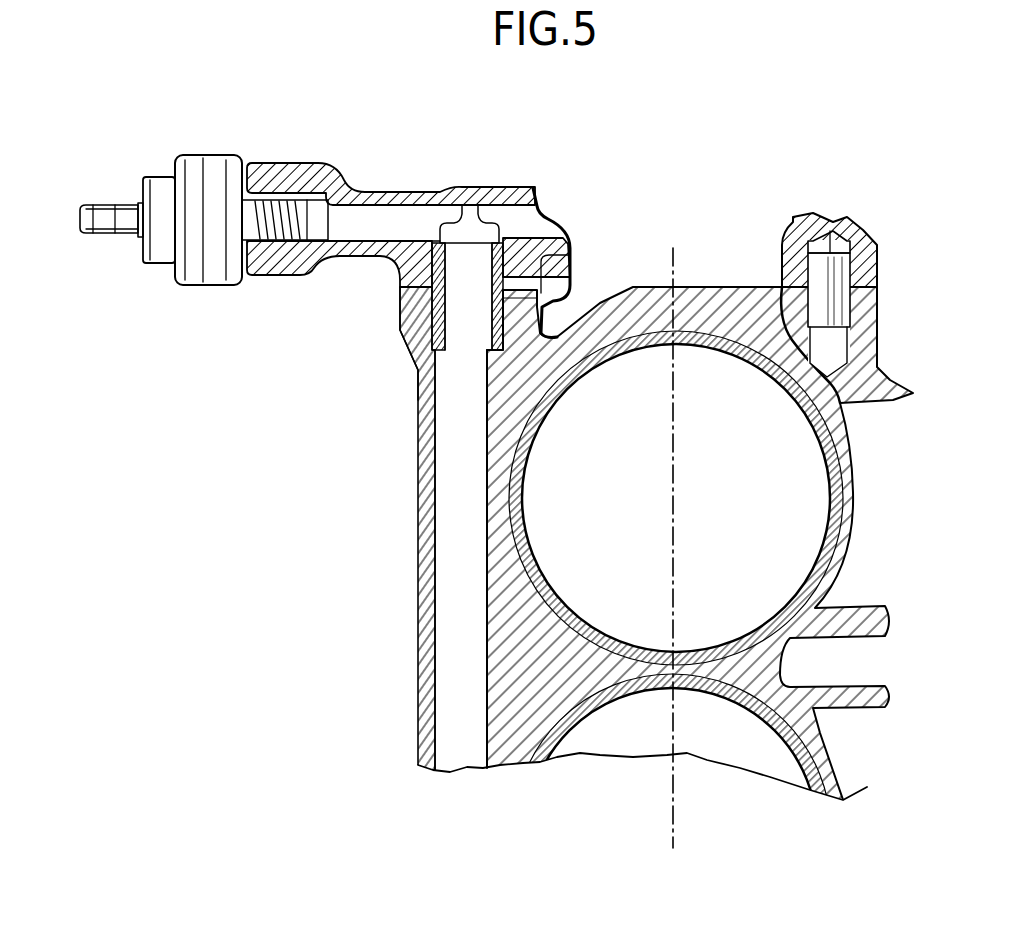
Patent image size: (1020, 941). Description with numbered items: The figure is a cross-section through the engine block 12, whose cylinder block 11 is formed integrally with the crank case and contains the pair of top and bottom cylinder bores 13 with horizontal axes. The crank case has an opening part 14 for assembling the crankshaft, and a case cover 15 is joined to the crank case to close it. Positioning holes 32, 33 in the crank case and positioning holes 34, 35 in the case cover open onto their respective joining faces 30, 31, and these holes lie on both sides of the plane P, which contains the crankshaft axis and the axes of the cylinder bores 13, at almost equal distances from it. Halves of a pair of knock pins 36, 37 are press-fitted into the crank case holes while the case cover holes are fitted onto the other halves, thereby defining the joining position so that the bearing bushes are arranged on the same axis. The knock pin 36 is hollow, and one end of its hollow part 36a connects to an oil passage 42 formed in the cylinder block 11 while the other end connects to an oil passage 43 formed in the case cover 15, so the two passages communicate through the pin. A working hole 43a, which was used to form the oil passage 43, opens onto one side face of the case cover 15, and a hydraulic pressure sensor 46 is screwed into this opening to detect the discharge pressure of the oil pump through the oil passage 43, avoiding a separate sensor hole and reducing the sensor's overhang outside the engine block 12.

The cylinder block 11 is at (849, 503).
The engine block 12 is at (863, 527).
The cylinder bores 13 is at (829, 488).
The opening part 14 is at (558, 300).
The case cover 15 is at (512, 195).
The joining face 30 is at (392, 272).
The joining face 31 is at (415, 343).
The positioning hole 32 is at (492, 337).
The positioning hole 33 is at (812, 322).
The positioning hole 34 is at (487, 243).
The positioning hole 35 is at (818, 273).
The knock pin 36 is at (431, 275).
The hollow part 36a is at (457, 317).
The knock pin 37 is at (827, 262).
The oil passage 42 is at (455, 482).
The oil passage 43 is at (540, 213).
The working hole 43a is at (361, 212).
The hydraulic pressure sensor 46 is at (207, 155).
The plane P is at (676, 263).